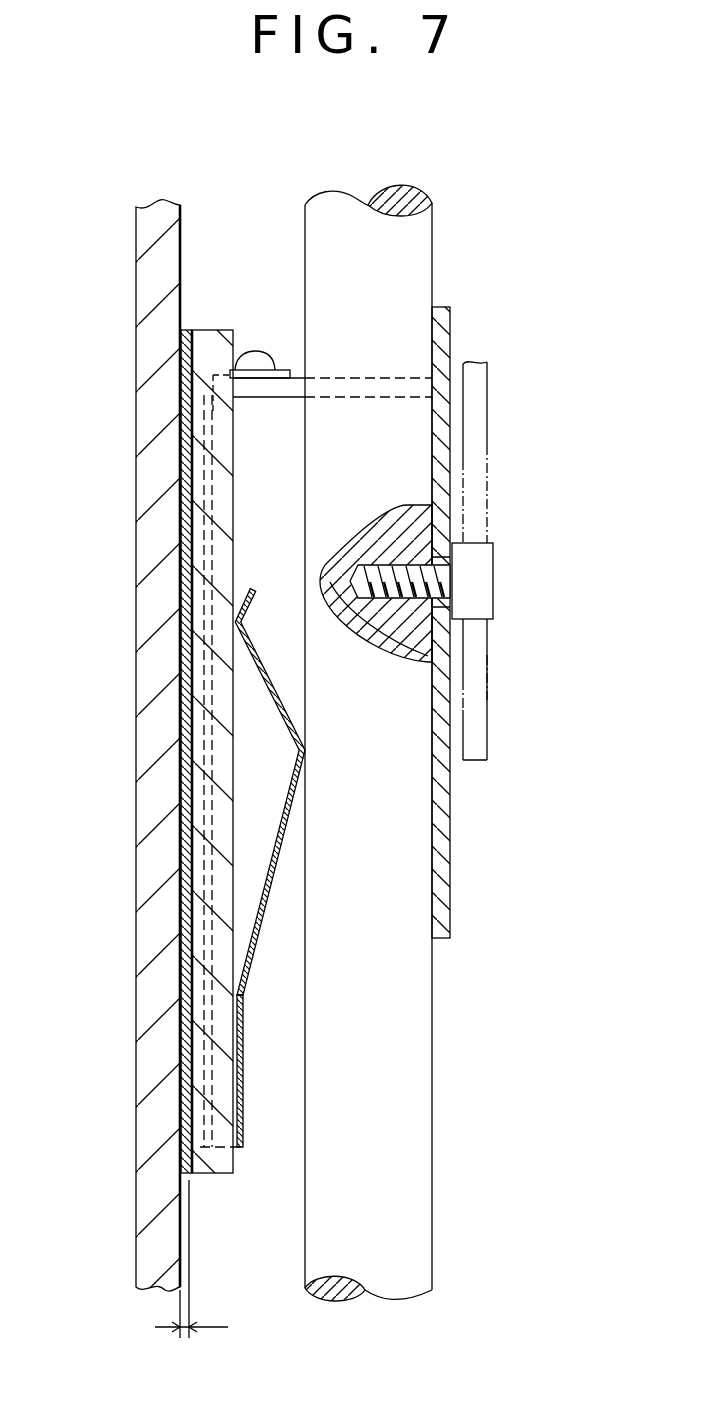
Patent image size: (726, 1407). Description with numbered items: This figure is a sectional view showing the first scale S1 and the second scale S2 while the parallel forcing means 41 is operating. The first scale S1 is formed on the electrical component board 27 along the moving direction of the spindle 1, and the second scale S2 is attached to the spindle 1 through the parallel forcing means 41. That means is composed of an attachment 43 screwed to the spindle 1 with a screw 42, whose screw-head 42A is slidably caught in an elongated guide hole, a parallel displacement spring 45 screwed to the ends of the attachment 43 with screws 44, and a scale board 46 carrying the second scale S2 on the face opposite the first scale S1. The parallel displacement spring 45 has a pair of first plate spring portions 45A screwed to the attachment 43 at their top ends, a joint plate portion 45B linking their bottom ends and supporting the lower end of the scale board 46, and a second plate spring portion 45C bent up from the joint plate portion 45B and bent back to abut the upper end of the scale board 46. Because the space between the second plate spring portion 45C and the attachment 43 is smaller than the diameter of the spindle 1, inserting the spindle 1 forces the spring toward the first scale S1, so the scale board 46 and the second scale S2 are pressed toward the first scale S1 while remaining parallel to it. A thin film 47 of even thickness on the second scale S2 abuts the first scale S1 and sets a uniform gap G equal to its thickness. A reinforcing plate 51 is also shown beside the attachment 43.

The spindle 1 is at (420, 238).
The electrical component board 27 is at (145, 235).
The parallel forcing means 41 is at (548, 295).
The screw 42 is at (425, 624).
The screw-head 42A is at (483, 582).
The attachment 43 is at (440, 467).
The screw 44 is at (254, 362).
The parallel displacement spring 45 is at (205, 581).
The first plate spring portion 45A is at (190, 694).
The joint plate portion 45B is at (240, 1088).
The second plate spring portion 45C is at (270, 890).
The scale board 46 is at (210, 338).
The thin film 47 is at (190, 375).
The reinforcing plate 51 is at (487, 382).
The first scale S1 is at (183, 205).
The second scale S2 is at (192, 333).
The gap G is at (191, 1275).